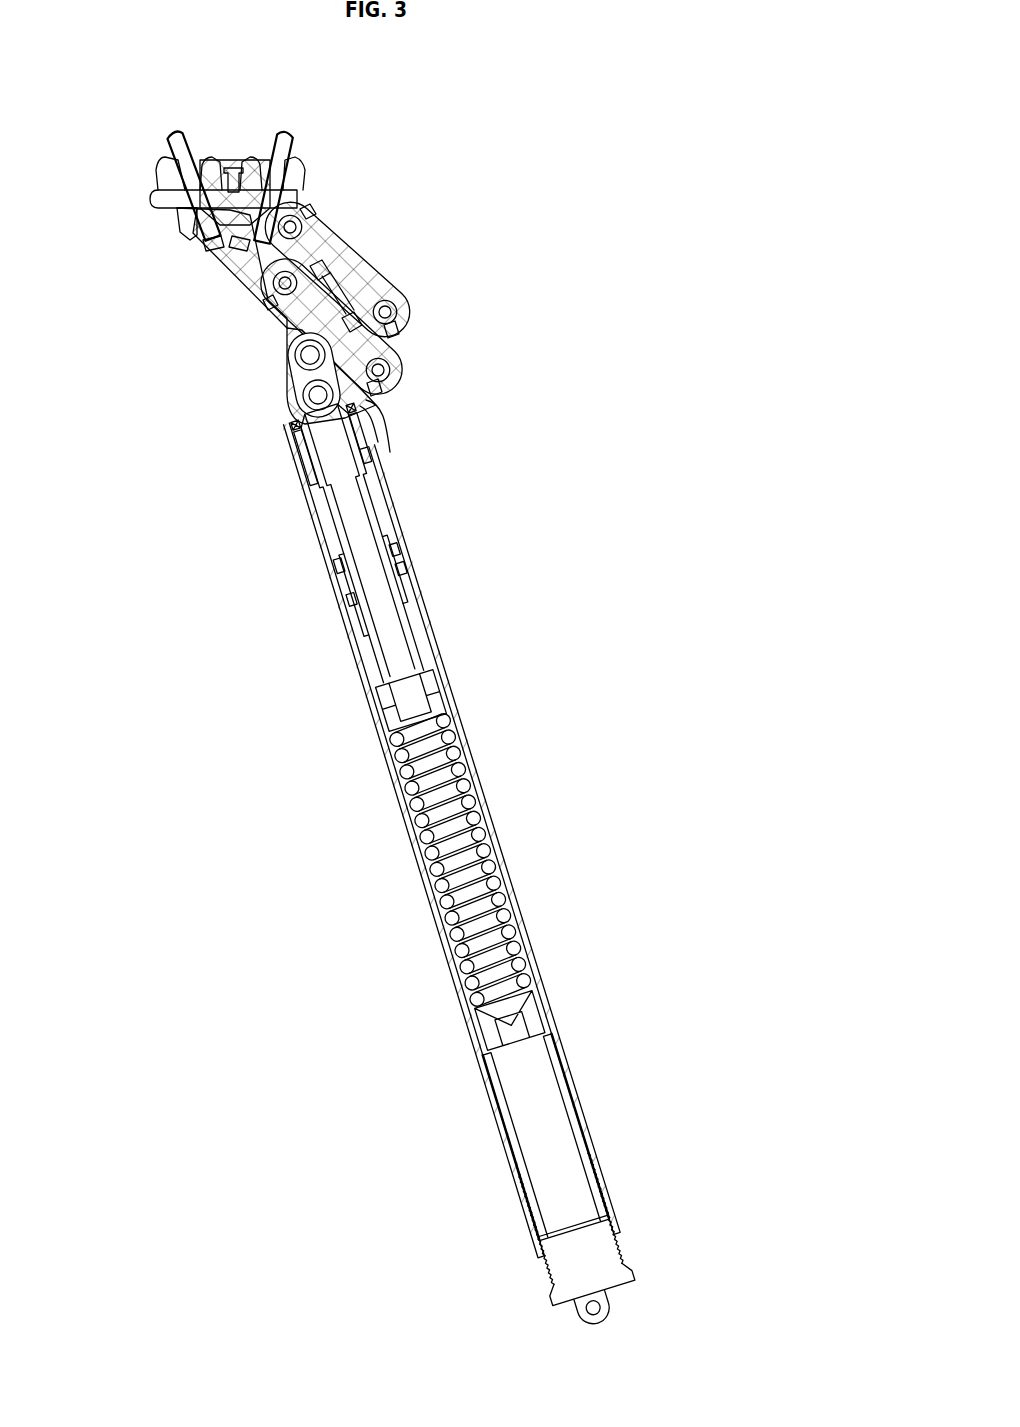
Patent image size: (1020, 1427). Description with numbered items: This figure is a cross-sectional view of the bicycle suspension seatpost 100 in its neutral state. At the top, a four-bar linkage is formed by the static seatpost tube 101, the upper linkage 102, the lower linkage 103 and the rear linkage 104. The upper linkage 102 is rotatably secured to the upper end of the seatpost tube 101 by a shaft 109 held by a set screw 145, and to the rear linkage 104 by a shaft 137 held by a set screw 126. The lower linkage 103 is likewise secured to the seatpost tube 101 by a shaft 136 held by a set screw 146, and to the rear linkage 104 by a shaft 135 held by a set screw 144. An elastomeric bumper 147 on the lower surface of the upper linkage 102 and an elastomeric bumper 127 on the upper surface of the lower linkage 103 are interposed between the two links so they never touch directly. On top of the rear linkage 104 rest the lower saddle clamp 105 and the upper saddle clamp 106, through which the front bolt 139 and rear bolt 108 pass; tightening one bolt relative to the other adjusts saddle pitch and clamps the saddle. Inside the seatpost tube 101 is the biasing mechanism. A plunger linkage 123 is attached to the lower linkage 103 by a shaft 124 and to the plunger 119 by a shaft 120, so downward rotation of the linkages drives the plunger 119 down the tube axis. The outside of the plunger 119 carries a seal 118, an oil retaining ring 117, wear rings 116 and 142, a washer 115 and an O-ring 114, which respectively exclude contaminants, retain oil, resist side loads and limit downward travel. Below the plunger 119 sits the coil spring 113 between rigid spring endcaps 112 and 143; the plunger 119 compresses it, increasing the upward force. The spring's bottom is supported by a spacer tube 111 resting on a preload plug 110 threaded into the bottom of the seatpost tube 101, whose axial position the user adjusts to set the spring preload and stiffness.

The bicycle suspension seatpost 100 is at (705, 203).
The seatpost tube 101 is at (400, 521).
The upper linkage 102 is at (412, 293).
The lower linkage 103 is at (287, 328).
The rear linkage 104 is at (225, 258).
The lower saddle clamp 105 is at (150, 197).
The upper saddle clamp 106 is at (300, 172).
The rear bolt 108 is at (168, 147).
The front bolt 139 is at (300, 147).
The shaft 109 is at (397, 313).
The preload plug 110 is at (588, 1263).
The spacer tube 111 is at (527, 1093).
The spring endcap 112 is at (408, 700).
The coil spring 113 is at (445, 775).
The O-ring 114 is at (348, 605).
The washer 115 is at (404, 568).
The wear ring 116 is at (336, 568).
The oil retaining ring 117 is at (378, 432).
The seal 118 is at (294, 428).
The plunger 119 is at (400, 640).
The shaft 120 is at (318, 397).
The plunger linkage 123 is at (303, 382).
The shaft 124 is at (310, 355).
The set screw 126 is at (312, 207).
The elastomeric bumper 127 is at (356, 318).
The shaft 135 is at (273, 284).
The shaft 136 is at (390, 372).
The shaft 137 is at (302, 227).
The wear ring 142 is at (306, 466).
The spring endcap 143 is at (522, 1018).
The set screw 144 is at (263, 305).
The set screw 145 is at (398, 338).
The set screw 146 is at (380, 393).
The elastomeric bumper 147 is at (326, 274).